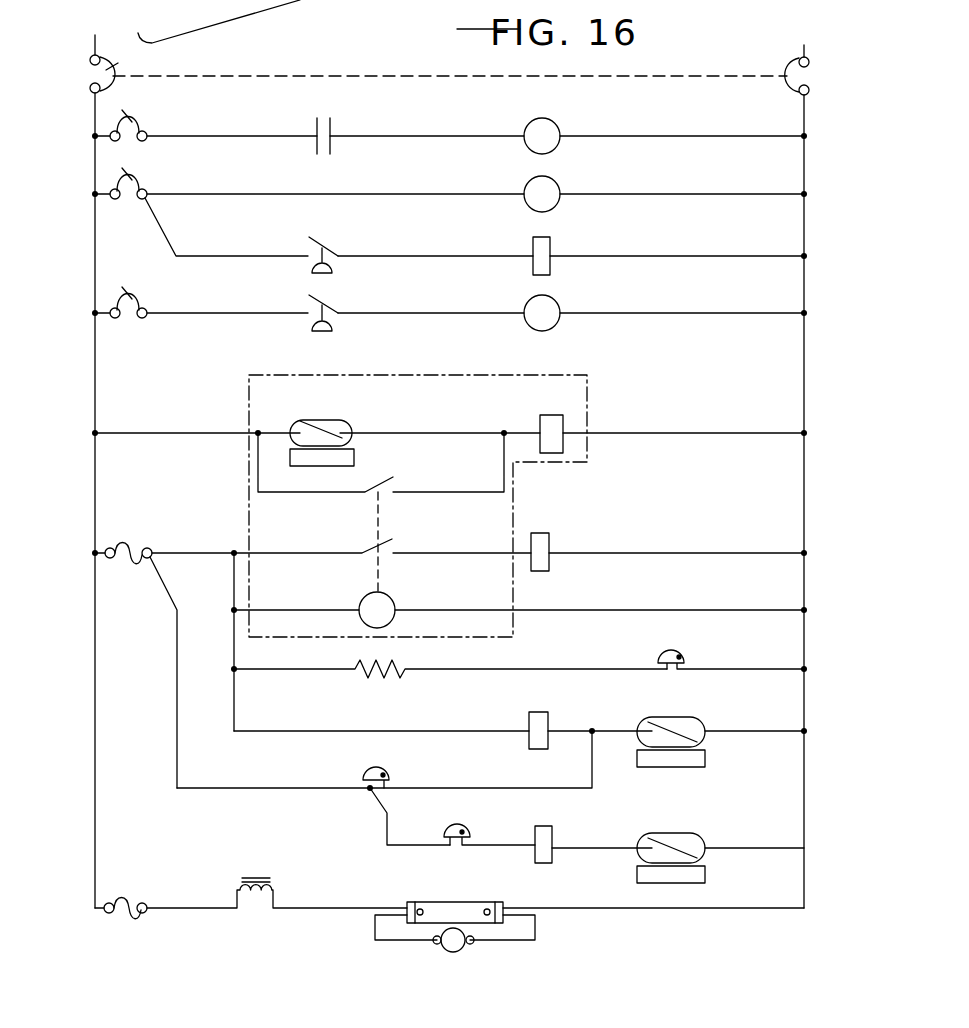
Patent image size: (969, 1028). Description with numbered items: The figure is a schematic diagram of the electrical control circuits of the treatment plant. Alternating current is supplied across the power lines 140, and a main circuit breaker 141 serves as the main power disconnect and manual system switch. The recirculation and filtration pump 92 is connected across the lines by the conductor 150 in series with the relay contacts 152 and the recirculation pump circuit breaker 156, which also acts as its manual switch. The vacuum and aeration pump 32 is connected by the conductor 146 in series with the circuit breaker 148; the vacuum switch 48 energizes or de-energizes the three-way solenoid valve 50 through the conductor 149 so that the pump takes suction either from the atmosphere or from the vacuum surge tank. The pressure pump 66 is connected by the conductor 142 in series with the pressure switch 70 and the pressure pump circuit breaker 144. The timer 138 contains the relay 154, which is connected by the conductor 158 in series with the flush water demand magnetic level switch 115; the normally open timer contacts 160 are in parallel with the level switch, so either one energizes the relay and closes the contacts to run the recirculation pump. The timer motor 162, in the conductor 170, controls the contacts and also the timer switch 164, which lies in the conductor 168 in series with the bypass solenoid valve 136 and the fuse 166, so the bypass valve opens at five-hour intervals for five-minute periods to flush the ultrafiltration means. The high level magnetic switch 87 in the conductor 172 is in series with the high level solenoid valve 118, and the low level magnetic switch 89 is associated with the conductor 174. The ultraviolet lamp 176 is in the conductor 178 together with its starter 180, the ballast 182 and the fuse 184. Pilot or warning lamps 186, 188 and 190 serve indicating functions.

The power lines 140 is at (93, 117).
The main circuit breaker 141 is at (146, 60).
The recirculation pump circuit breaker 156 is at (142, 121).
The relay contacts 152 is at (332, 121).
The recirculation and filtration pump 92 is at (556, 124).
The conductor 150 is at (660, 136).
The circuit breaker 148 is at (145, 178).
The vacuum and aeration pump 32 is at (556, 182).
The conductor 146 is at (655, 194).
The vacuum switch 48 is at (320, 243).
The three-way solenoid valve 50 is at (550, 242).
The conductor 149 is at (635, 256).
The pressure pump circuit breaker 144 is at (143, 298).
The pressure switch 70 is at (320, 300).
The pressure pump 66 is at (556, 301).
The conductor 142 is at (680, 313).
The timer 138 is at (468, 374).
The flush water demand magnetic level switch 115 is at (330, 419).
The relay 154 is at (553, 414).
The conductor 158 is at (678, 433).
The timer switch contacts 160 is at (389, 480).
The fuse 166 is at (123, 545).
The timer switch 164 is at (388, 537).
The bypass solenoid valve 136 is at (545, 533).
The conductor 168 is at (655, 553).
The timer motor 162 is at (392, 596).
The conductor 170 is at (640, 610).
The pilot or warning lamp 186 is at (683, 648).
The high level solenoid valve 118 is at (548, 713).
The high level magnetic switch 87 is at (690, 718).
The conductor 172 is at (738, 731).
The pilot or warning lamp 188 is at (387, 765).
The pilot or warning lamp 190 is at (465, 820).
The low level magnetic switch 89 is at (690, 835).
The conductor 174 is at (738, 848).
The fuse 184 is at (123, 900).
The ballast 182 is at (274, 890).
The ultraviolet lamp 176 is at (472, 900).
The conductor 178 is at (680, 911).
The starter 180 is at (455, 952).